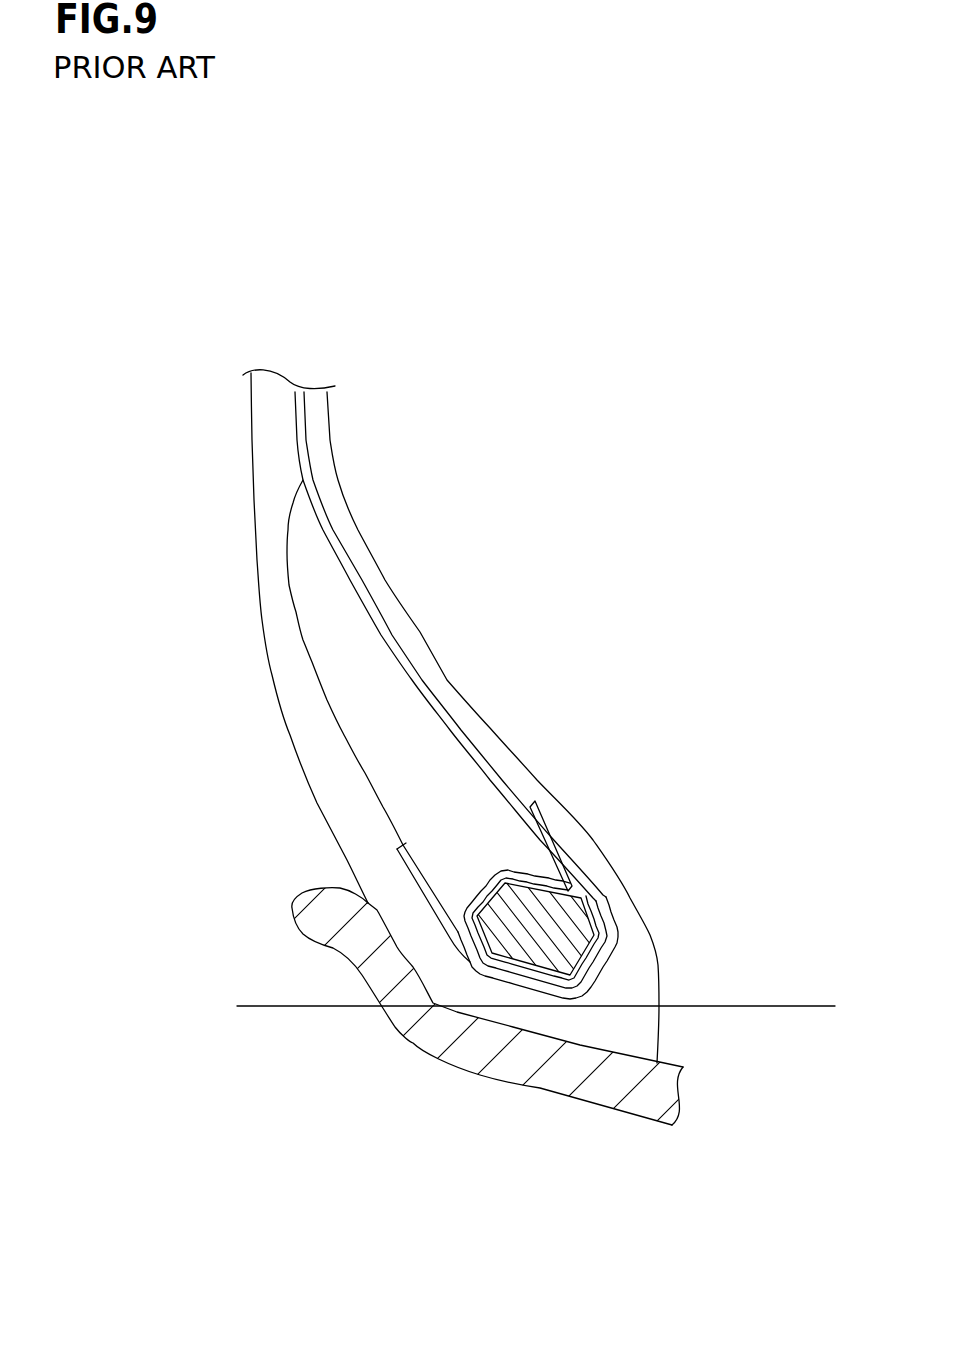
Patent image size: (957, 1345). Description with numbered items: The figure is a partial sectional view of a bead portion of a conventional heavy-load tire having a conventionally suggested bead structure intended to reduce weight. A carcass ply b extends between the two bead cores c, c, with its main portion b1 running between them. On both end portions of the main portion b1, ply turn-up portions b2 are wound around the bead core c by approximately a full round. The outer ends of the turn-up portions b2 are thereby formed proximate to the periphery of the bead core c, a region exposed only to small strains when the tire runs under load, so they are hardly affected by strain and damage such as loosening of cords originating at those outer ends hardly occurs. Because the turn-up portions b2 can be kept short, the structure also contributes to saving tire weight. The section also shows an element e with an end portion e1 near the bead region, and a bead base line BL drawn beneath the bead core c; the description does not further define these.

The carcass ply b is at (488, 690).
The main portion of the carcass ply b1 is at (393, 645).
The ply turn-up portion b2 is at (474, 893).
The bead core c is at (553, 927).
The chafer e is at (531, 991).
The chafer end portion e1 is at (403, 843).
The bead base line BL is at (698, 1007).